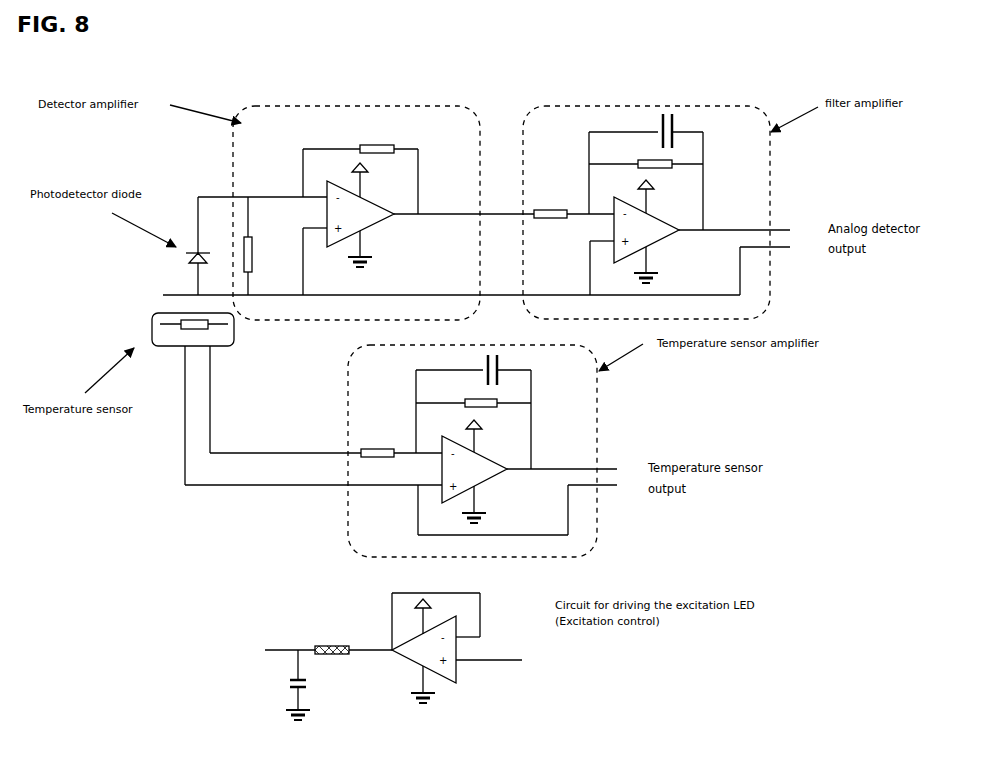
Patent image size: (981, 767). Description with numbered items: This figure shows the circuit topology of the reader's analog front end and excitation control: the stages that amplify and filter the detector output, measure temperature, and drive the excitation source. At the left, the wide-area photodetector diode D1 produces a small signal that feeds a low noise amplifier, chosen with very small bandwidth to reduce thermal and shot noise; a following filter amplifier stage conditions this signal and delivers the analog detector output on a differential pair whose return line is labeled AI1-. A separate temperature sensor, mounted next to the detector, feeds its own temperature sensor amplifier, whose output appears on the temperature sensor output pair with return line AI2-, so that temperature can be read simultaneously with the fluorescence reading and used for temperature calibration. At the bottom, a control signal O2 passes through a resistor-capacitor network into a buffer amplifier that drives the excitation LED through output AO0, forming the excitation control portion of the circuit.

The photodetector diode D1 is at (205, 246).
The analog detector output negative AI1- is at (766, 271).
The temperature sensor output negative AI2- is at (593, 510).
The excitation control input O2 is at (322, 641).
The excitation LED drive output AO0 is at (497, 654).